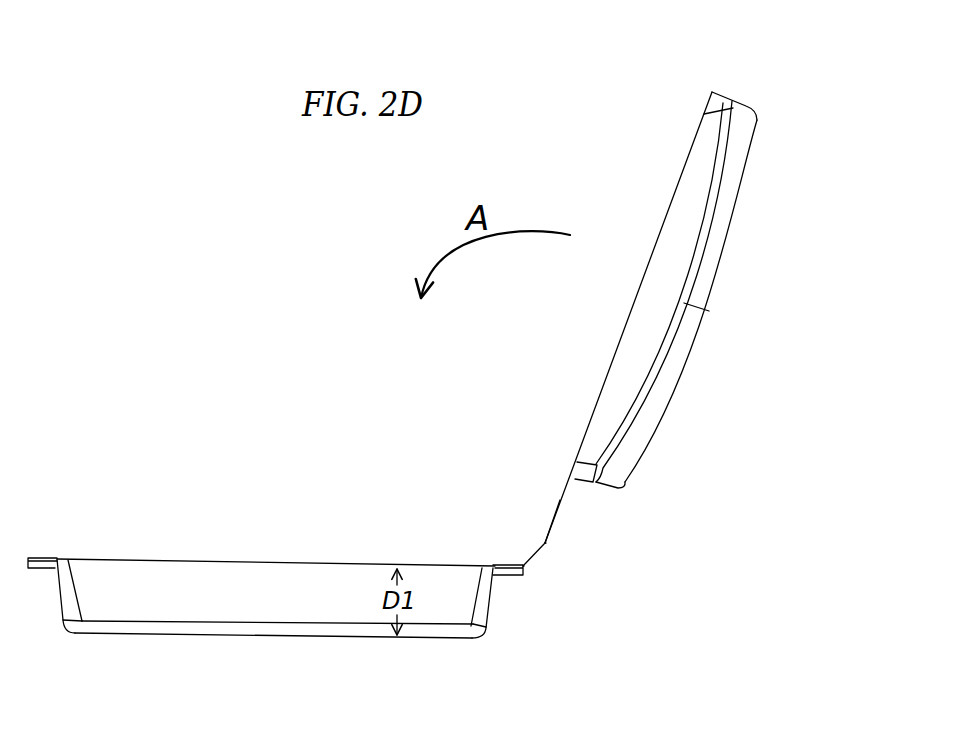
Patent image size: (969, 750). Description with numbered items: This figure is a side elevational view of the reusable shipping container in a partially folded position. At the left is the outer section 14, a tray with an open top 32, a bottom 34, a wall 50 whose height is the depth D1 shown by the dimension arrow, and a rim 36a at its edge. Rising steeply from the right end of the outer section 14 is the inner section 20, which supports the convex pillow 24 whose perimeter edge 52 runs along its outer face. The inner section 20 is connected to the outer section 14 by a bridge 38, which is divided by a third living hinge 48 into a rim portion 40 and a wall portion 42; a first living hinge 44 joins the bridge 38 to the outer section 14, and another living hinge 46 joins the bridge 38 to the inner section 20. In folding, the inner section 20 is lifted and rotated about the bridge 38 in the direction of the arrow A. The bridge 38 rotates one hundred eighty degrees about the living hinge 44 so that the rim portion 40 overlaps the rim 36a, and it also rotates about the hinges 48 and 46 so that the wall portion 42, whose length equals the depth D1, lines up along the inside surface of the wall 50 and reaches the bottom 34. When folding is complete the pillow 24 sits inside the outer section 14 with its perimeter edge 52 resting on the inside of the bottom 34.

The outer section 14 is at (145, 598).
The inner section 20 is at (734, 98).
The convex pillow 24 is at (718, 277).
The open top 32 is at (242, 562).
The bottom 34 is at (278, 638).
The rim 36a is at (508, 577).
The bridge 38 is at (700, 534).
The rim portion 40 is at (538, 553).
The wall portion 42 is at (561, 506).
The living hinge 44 is at (521, 562).
The living hinge 46 is at (565, 474).
The living hinge 48 is at (542, 540).
The wall 50 is at (489, 604).
The perimeter edge 52 is at (685, 160).